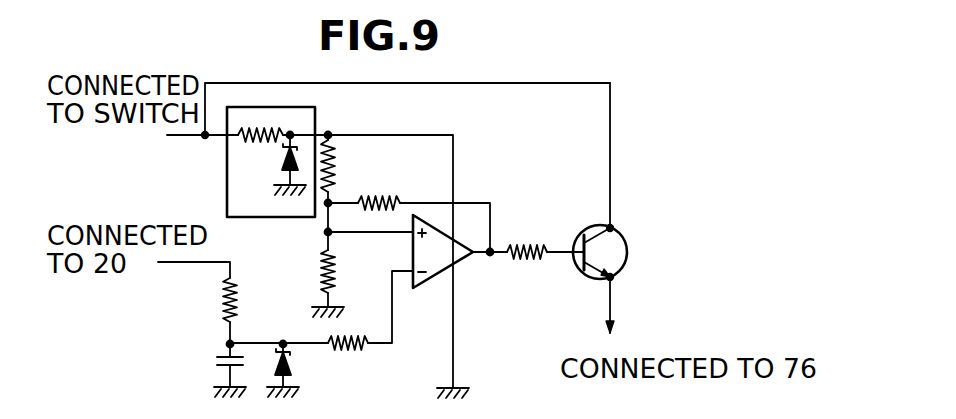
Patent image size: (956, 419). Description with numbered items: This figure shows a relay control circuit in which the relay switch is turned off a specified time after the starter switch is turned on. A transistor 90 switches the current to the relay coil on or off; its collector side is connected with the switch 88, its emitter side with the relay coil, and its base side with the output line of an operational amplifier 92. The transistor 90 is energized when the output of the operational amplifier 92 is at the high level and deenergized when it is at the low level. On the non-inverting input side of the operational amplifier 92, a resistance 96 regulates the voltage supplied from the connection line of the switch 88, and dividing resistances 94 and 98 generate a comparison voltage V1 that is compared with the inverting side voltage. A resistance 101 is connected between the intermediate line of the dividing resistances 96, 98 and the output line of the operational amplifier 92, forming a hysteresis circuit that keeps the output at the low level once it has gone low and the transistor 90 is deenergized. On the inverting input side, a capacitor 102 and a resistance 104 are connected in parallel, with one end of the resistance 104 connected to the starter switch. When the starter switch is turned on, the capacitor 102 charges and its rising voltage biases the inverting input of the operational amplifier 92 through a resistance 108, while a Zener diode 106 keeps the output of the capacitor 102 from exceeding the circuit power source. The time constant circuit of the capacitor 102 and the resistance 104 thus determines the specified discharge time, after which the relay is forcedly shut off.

The switch 88 is at (184, 137).
The dividing resistance 94 is at (227, 172).
The resistance 96 is at (331, 180).
The dividing resistance 98 is at (325, 275).
The resistance 101 is at (386, 200).
The comparison voltage V1 is at (366, 232).
The operational amplifier 92 is at (458, 262).
The transistor 90 is at (618, 229).
The resistance 104 is at (224, 304).
The capacitor 102 is at (217, 358).
The Zener diode 106 is at (290, 365).
The resistance 108 is at (355, 346).